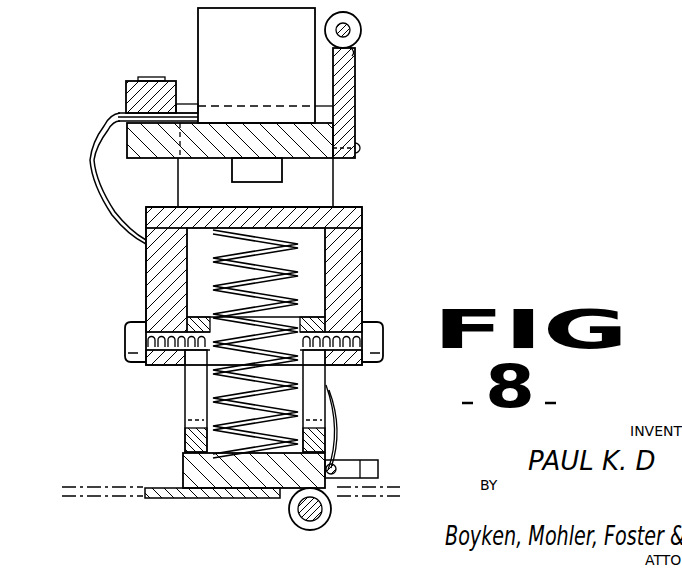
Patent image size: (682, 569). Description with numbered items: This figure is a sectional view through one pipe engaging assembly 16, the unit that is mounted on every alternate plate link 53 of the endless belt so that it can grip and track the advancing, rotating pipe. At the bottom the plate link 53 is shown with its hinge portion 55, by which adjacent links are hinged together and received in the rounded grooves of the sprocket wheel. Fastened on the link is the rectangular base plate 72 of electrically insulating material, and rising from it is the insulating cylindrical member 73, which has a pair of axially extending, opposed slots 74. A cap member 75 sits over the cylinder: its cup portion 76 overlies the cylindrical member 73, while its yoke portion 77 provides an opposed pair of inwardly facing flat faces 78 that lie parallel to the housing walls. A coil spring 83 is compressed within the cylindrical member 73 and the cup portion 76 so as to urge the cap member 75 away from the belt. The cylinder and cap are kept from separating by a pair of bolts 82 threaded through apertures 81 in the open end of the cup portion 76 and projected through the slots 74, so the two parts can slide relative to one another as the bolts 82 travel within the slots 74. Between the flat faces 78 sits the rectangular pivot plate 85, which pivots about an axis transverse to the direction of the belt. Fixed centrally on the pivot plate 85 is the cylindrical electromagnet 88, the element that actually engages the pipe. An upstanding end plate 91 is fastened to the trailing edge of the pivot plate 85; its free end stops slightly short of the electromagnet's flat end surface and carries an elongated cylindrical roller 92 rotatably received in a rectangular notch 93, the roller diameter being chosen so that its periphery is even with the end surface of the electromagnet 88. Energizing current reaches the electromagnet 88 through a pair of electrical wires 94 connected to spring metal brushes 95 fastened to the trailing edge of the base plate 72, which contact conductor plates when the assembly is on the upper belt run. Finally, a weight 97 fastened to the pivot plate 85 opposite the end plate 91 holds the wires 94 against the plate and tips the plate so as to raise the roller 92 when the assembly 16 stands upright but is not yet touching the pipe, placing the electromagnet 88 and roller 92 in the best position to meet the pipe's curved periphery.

The pipe engaging assembly 16 is at (427, 110).
The plate link 53 is at (218, 500).
The hinge portion 55 is at (293, 523).
The base plate 72 is at (183, 470).
The cylindrical member 73 is at (183, 437).
The slot 74 is at (186, 394).
The cap member 75 is at (333, 206).
The cup portion 76 is at (147, 273).
The yoke portion 77 is at (196, 110).
The flat face 78 is at (180, 183).
The aperture 81 is at (172, 335).
The bolt 82 is at (128, 358).
The coil spring 83 is at (286, 272).
The pivot plate 85 is at (358, 148).
The electromagnet 88 is at (198, 36).
The end plate 91 is at (356, 103).
The roller 92 is at (362, 29).
The notch 93 is at (349, 52).
The electrical wire 94 is at (112, 122).
The brush 95 is at (350, 462).
The weight 97 is at (127, 93).